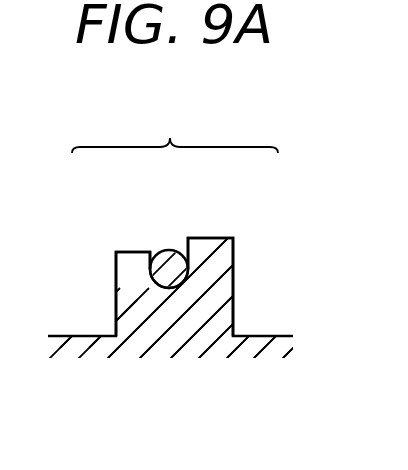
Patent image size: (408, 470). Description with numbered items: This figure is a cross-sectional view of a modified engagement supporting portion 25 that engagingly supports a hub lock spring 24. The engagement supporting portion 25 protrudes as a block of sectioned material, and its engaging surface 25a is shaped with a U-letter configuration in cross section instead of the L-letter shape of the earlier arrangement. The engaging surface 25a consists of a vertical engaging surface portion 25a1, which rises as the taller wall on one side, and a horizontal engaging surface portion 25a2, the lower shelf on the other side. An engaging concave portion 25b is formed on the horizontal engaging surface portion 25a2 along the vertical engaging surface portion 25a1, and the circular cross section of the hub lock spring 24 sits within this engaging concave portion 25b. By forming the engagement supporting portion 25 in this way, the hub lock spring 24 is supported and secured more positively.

The engagement supporting portion 25 is at (233, 275).
The hub lock spring 24 is at (173, 283).
The engaging surface 25a is at (175, 129).
The vertical engaging surface portion 25a1 is at (184, 246).
The horizontal engaging surface portion 25a2 is at (133, 252).
The engaging concave portion 25b is at (157, 272).